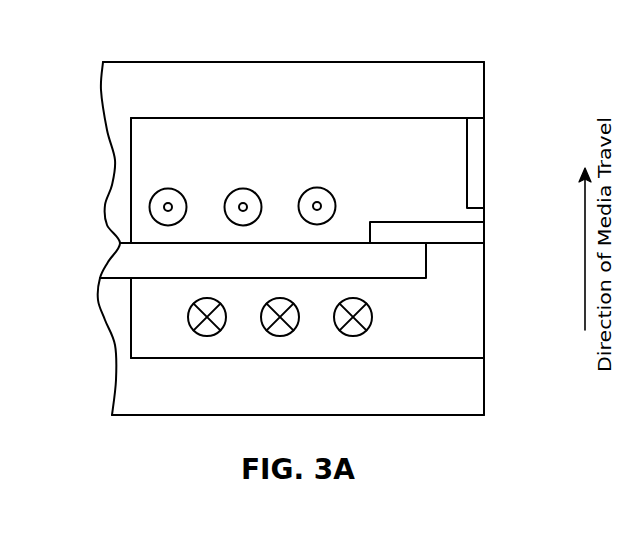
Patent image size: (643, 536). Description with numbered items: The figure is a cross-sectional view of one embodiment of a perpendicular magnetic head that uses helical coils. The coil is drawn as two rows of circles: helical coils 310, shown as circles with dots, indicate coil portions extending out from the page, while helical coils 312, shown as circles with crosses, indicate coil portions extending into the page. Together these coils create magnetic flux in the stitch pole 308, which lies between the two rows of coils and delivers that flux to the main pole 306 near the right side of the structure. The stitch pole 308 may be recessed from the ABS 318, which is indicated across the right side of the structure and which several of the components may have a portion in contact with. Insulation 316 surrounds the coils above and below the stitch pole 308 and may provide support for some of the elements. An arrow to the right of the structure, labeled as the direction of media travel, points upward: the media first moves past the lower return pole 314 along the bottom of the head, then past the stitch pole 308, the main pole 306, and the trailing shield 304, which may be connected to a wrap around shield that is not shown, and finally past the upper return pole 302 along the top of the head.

The upper return pole 302 is at (349, 101).
The trailing shield 304 is at (484, 168).
The main pole 306 is at (484, 227).
The stitch pole 308 is at (289, 272).
The helical coils 310 is at (166, 189).
The helical coils 312 is at (189, 324).
The lower return pole 314 is at (289, 399).
The insulation 316 is at (389, 177).
The ABS 318 is at (484, 82).